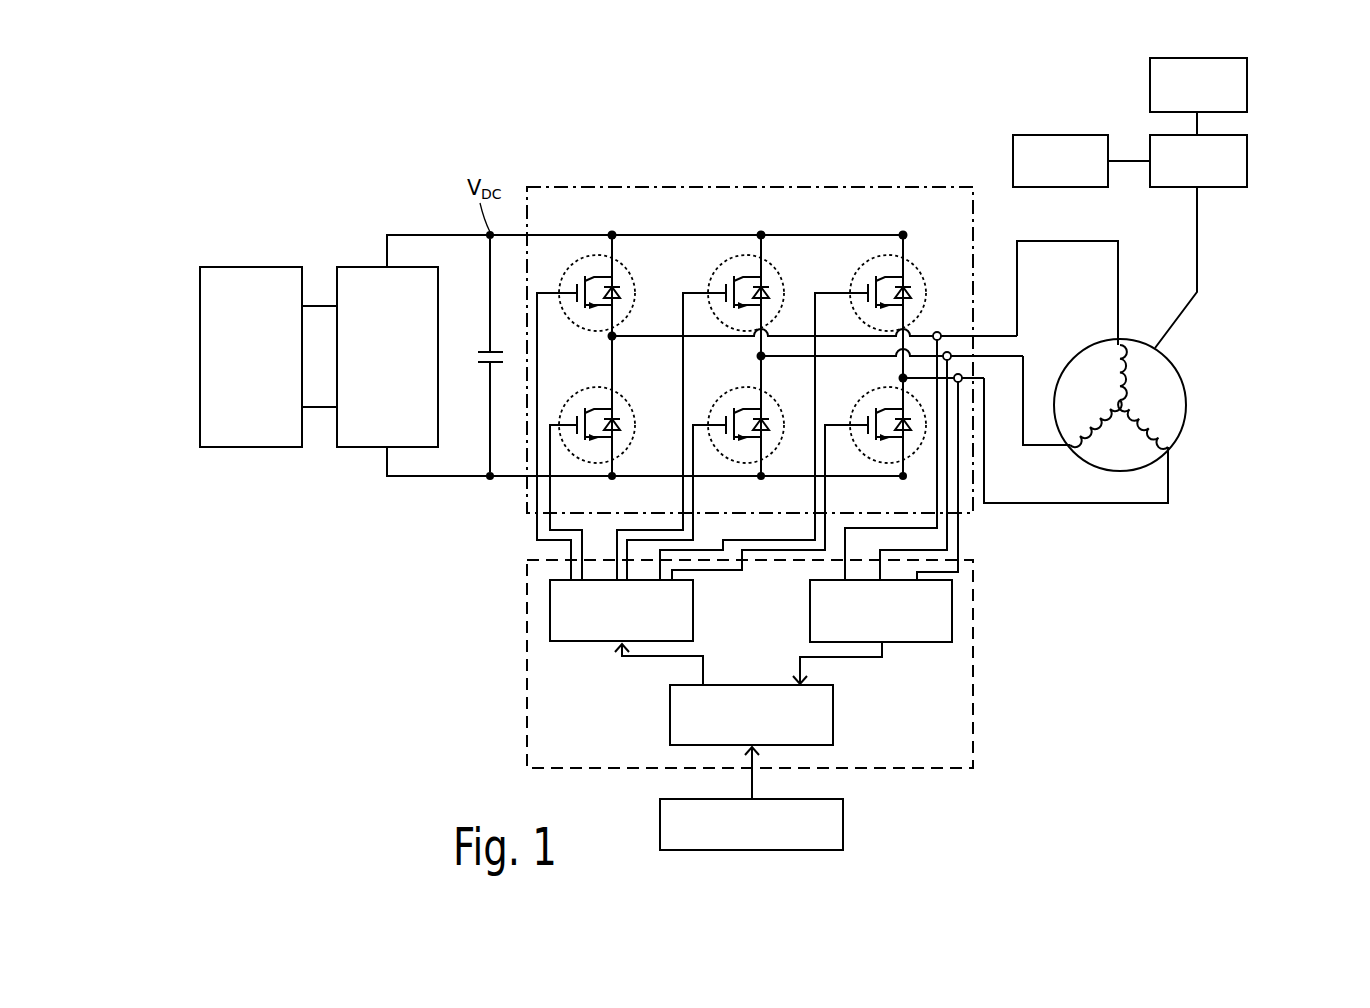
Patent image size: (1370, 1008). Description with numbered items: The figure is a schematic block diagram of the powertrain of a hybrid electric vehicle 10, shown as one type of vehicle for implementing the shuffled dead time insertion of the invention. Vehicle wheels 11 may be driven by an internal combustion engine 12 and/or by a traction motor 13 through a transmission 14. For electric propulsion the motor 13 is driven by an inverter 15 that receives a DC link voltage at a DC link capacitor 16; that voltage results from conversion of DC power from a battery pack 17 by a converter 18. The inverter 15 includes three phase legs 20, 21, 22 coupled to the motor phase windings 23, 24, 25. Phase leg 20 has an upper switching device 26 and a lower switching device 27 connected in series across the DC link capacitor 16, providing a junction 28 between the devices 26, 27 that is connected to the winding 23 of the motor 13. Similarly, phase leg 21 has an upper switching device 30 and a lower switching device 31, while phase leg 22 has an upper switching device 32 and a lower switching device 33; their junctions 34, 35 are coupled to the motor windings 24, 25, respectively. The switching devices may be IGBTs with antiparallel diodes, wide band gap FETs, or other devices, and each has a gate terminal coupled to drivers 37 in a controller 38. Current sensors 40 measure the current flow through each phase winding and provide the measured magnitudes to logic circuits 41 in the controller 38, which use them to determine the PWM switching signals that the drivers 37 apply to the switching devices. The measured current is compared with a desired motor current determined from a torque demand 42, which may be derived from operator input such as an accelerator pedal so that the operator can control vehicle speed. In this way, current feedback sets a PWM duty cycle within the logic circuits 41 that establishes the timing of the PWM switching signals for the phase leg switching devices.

The hybrid electric vehicle 10 is at (349, 117).
The vehicle wheels 11 is at (1070, 134).
The internal combustion engine 12 is at (1247, 84).
The traction motor 13 is at (1073, 358).
The transmission 14 is at (1247, 165).
The inverter 15 is at (822, 186).
The DC link capacitor 16 is at (487, 348).
The battery pack 17 is at (251, 267).
The converter 18 is at (362, 267).
The phase leg 20 is at (619, 224).
The phase leg 21 is at (768, 224).
The phase leg 22 is at (910, 224).
The motor phase winding 23 is at (1126, 357).
The motor phase winding 24 is at (1086, 433).
The motor phase winding 25 is at (1160, 428).
The upper switching device 26 is at (632, 272).
The lower switching device 27 is at (630, 402).
The junction 28 is at (611, 337).
The upper switching device 30 is at (780, 270).
The lower switching device 31 is at (778, 402).
The upper switching device 32 is at (924, 280).
The lower switching device 33 is at (911, 457).
The junction 34 is at (760, 357).
The junction 35 is at (902, 378).
The drivers 37 is at (695, 607).
The controller 38 is at (527, 648).
The current sensors 40 is at (918, 643).
The logic circuits 41 is at (669, 714).
The torque demand 42 is at (843, 824).